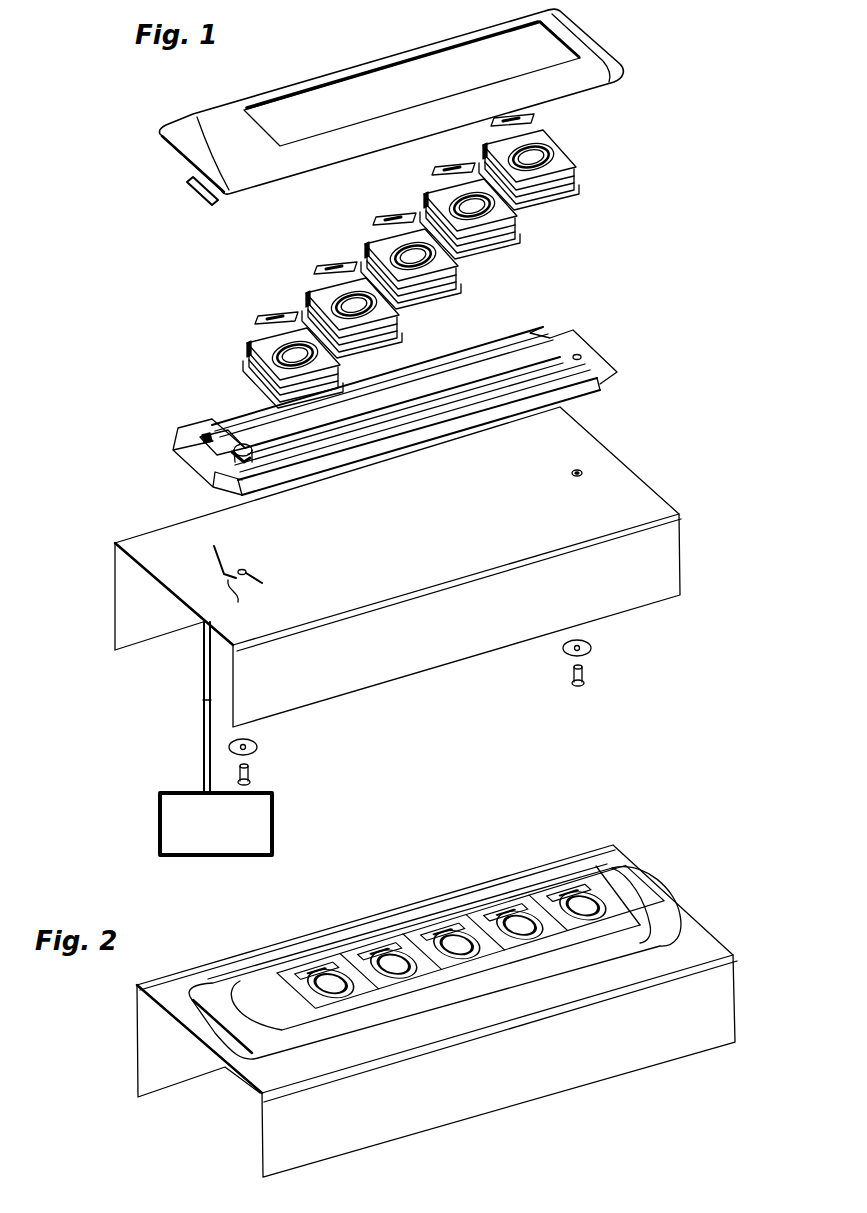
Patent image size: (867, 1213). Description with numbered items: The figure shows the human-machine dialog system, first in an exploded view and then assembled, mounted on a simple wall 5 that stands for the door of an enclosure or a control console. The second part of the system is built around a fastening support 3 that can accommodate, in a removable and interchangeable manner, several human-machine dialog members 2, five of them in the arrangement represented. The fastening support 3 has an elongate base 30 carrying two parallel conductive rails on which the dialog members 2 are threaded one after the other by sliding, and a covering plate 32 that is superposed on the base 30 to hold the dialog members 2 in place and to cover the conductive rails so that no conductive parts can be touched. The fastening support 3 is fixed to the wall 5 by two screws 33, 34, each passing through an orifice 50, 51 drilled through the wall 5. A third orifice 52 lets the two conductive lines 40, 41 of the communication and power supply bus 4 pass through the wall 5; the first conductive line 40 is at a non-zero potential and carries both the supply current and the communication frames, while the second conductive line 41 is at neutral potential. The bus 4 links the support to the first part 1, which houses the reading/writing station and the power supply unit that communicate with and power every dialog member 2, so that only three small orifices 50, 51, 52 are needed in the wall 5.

In FIG. 1, the first part 1 is at (216, 824).
In FIG. 1, the human-machine dialog members 2 is at (247, 344).
In FIG. 2, the human-machine dialog members 2 is at (522, 897).
In FIG. 2, the fastening support 3 is at (252, 962).
In FIG. 1, the communication and power supply bus 4 is at (203, 705).
In FIG. 1, the wall 5 is at (612, 476).
In FIG. 2, the wall 5 is at (432, 904).
In FIG. 1, the base 30 is at (180, 430).
In FIG. 1, the covering plate 32 is at (162, 142).
In FIG. 1, the screw 33 is at (255, 772).
In FIG. 1, the screw 34 is at (587, 668).
In FIG. 1, the first conductive line 40 is at (212, 566).
In FIG. 1, the second conductive line 41 is at (262, 576).
In FIG. 1, the orifice 50 is at (570, 474).
In FIG. 1, the orifice 51 is at (245, 570).
In FIG. 1, the orifice 52 is at (240, 590).